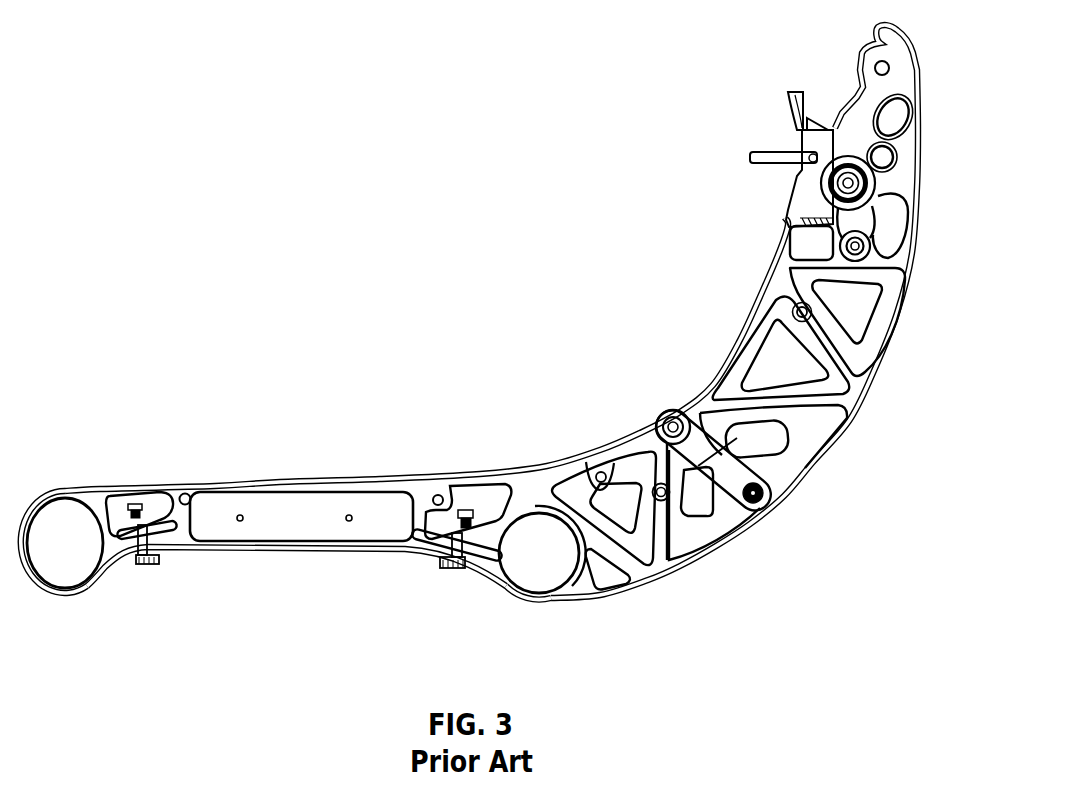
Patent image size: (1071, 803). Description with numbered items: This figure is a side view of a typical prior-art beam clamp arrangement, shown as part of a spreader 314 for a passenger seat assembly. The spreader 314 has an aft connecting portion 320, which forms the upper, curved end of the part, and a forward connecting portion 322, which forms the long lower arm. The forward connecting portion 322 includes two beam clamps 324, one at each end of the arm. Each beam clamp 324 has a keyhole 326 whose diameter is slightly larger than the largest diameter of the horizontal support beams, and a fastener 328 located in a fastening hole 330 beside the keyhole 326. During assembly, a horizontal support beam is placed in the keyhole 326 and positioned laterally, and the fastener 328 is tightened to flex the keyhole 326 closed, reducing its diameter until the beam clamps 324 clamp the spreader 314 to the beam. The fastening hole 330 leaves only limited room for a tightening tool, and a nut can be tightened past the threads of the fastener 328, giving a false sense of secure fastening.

The spreader 314 is at (492, 326).
The aft connecting portion 320 is at (778, 35).
The forward connecting portion 322 is at (292, 458).
The beam clamp 324 is at (76, 592).
The keyhole 326 is at (62, 489).
The fastener 328 is at (150, 567).
The fastening hole 330 is at (150, 492).